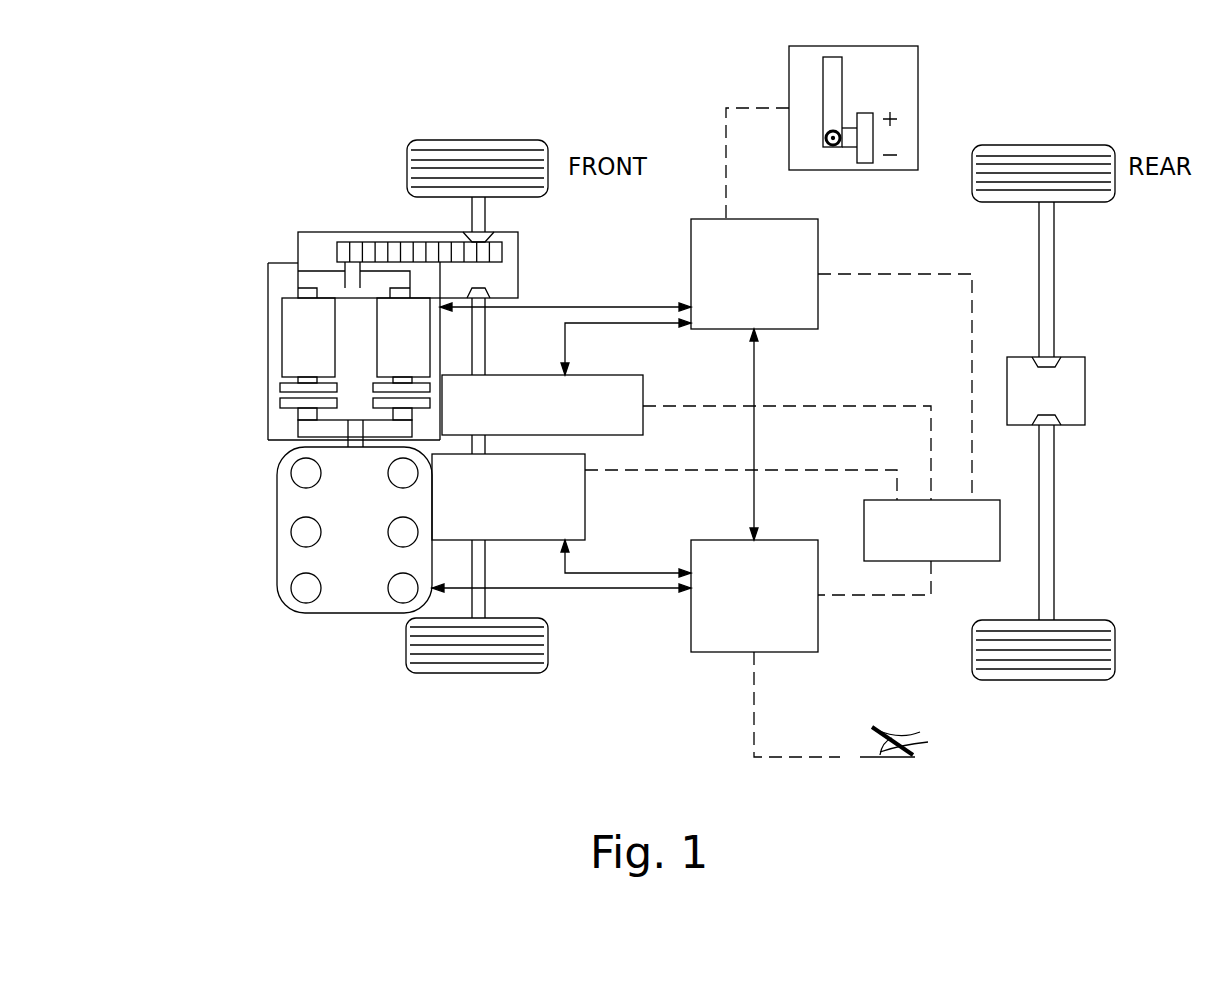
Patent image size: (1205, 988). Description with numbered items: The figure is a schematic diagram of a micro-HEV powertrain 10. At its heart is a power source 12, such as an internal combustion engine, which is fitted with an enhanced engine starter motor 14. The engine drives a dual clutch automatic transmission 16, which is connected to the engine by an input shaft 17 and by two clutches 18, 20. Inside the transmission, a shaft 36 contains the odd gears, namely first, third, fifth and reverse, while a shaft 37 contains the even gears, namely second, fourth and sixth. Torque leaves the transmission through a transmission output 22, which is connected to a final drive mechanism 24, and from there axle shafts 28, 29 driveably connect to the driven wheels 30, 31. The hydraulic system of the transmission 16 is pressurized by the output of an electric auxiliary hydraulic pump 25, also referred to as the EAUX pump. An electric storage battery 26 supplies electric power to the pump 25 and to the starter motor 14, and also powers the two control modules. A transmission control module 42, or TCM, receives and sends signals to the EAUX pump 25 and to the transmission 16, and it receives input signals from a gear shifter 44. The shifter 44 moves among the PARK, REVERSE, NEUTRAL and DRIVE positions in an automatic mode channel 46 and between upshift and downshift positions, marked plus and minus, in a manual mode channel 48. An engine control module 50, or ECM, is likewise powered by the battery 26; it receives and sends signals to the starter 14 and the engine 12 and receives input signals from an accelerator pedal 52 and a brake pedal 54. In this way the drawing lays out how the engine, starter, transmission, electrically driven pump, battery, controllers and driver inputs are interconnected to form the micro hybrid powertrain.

The micro-HEV powertrain 10 is at (656, 383).
The power source 12 is at (368, 613).
The enhanced engine starter motor 14 is at (585, 490).
The dual clutch automatic transmission 16 is at (373, 374).
The input shaft 17 is at (353, 427).
The clutch 18 is at (293, 388).
The clutch 20 is at (395, 403).
The transmission output 22 is at (355, 277).
The final drive mechanism 24 is at (411, 233).
The electric auxiliary hydraulic pump 25 is at (643, 412).
The electric storage battery 26 is at (863, 530).
The axle shaft 28 is at (485, 212).
The axle shaft 29 is at (485, 598).
The driven wheel 30 is at (407, 167).
The driven wheel 31 is at (450, 673).
The shaft containing odd gears 36 is at (288, 320).
The shaft containing even gears 37 is at (430, 340).
The transmission control module 42 is at (820, 292).
The gear shifter 44 is at (889, 87).
The automatic mode channel 46 is at (833, 68).
The manual mode channel 48 is at (865, 113).
The engine control module 50 is at (818, 630).
The accelerator pedal 52 is at (859, 726).
The brake pedal 54 is at (875, 732).